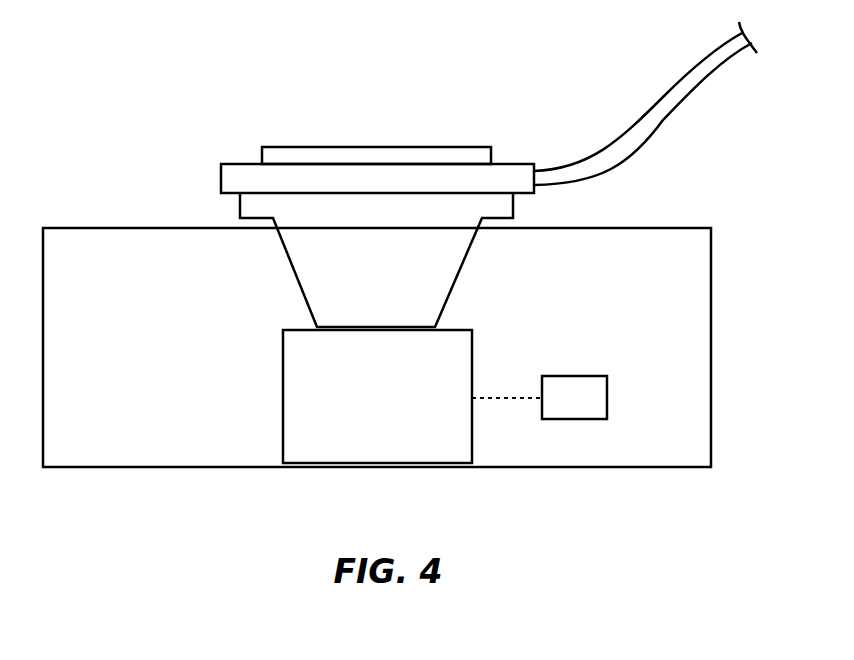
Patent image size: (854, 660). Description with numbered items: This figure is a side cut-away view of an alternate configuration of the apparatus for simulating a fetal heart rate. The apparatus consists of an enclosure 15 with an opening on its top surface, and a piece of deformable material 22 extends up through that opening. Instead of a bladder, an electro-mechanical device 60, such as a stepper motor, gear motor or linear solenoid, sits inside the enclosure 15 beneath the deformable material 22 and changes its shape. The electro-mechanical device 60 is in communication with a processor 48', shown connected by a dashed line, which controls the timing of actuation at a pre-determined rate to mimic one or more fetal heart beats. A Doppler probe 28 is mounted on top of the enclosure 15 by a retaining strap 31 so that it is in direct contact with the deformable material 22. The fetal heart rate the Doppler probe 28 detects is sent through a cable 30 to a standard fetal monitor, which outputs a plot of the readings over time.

The enclosure 15 is at (660, 228).
The deformable material 22 is at (338, 261).
The Doppler probe 28 is at (513, 175).
The cable 30 is at (693, 72).
The retaining strap 31 is at (400, 157).
The electro-mechanical device 60 is at (364, 409).
The processor 48' is at (539, 397).